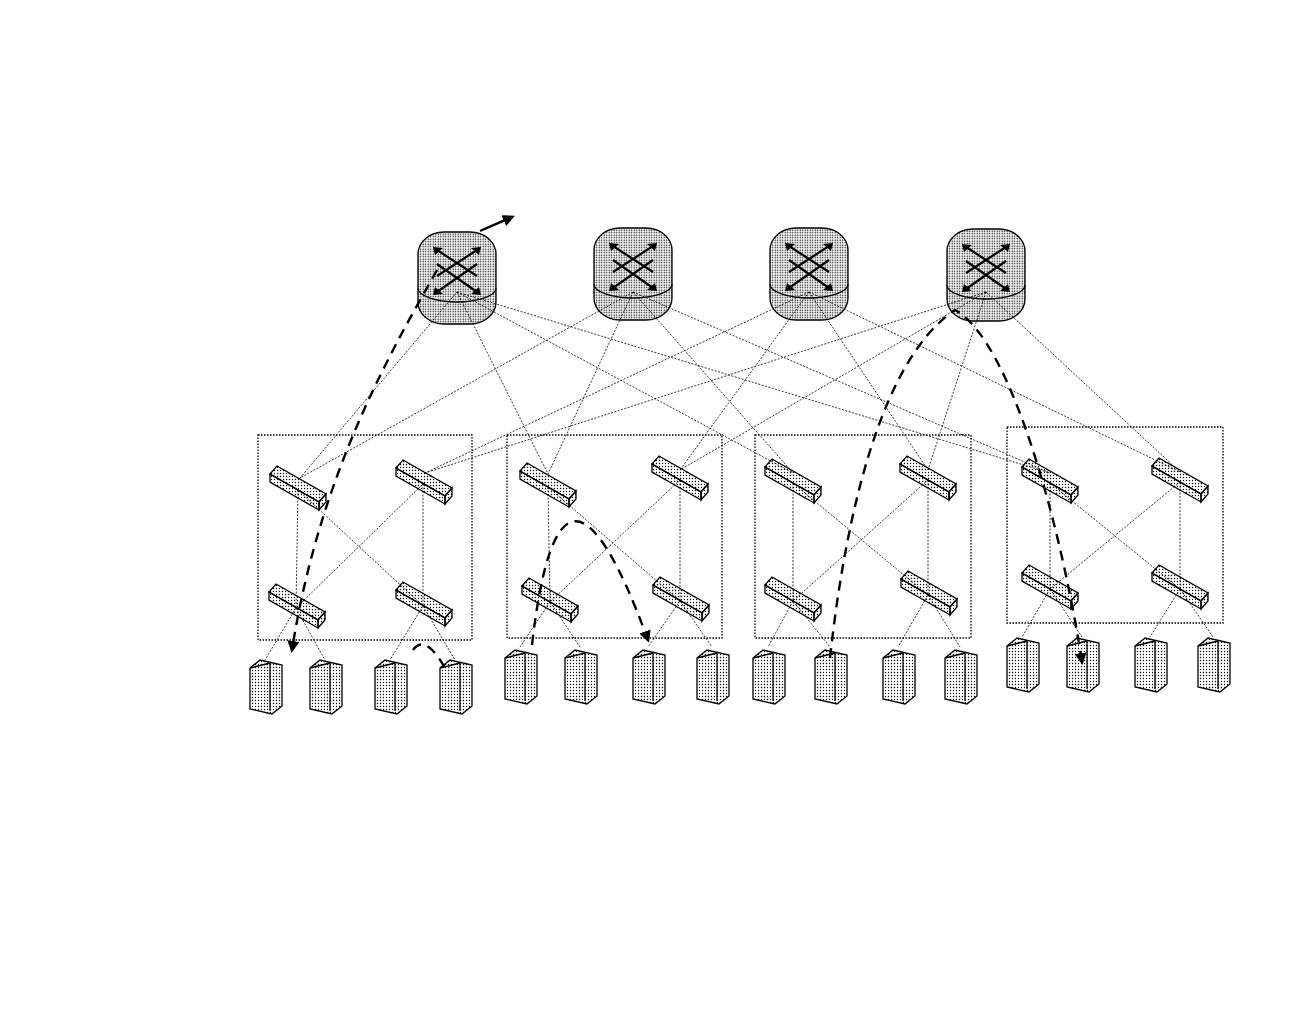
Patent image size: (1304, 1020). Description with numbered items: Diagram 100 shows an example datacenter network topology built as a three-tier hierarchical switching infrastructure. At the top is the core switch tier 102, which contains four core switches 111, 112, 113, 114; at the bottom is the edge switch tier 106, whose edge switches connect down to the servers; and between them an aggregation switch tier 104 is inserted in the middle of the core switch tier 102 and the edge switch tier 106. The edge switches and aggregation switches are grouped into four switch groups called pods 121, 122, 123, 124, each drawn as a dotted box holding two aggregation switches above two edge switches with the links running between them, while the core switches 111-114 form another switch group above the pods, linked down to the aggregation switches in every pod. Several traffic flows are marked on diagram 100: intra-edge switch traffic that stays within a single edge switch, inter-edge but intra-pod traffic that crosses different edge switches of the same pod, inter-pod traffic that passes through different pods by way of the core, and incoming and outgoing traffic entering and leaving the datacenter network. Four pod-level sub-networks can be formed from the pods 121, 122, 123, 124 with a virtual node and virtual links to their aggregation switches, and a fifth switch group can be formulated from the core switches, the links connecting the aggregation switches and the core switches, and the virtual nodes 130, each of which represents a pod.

The diagram 100 is at (1162, 104).
The core switch tier 102 is at (105, 247).
The aggregation switch tier 104 is at (133, 418).
The edge switch tier 106 is at (133, 582).
The core switch 111 is at (418, 237).
The core switch 112 is at (630, 216).
The core switch 113 is at (798, 216).
The core switch 114 is at (975, 216).
The pod 121 is at (316, 420).
The pod 122 is at (568, 420).
The pod 123 is at (828, 424).
The pod 124 is at (1152, 410).
The virtual nodes 130 is at (1228, 715).